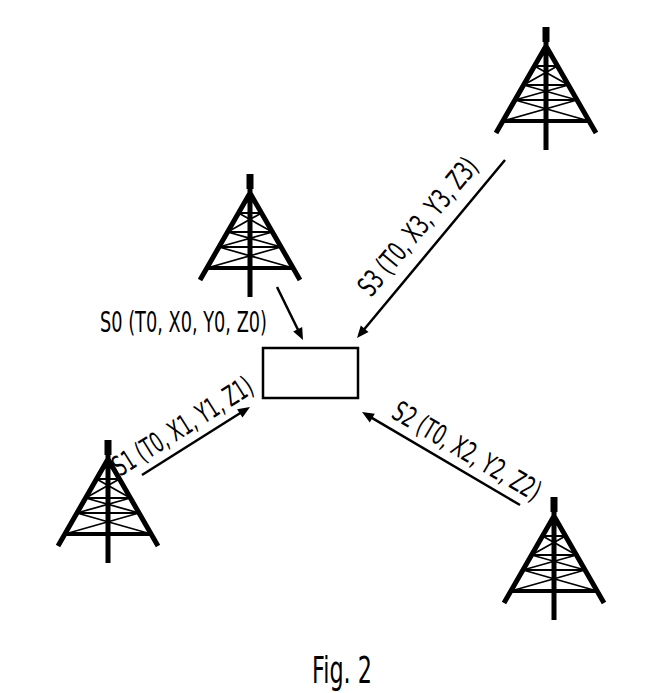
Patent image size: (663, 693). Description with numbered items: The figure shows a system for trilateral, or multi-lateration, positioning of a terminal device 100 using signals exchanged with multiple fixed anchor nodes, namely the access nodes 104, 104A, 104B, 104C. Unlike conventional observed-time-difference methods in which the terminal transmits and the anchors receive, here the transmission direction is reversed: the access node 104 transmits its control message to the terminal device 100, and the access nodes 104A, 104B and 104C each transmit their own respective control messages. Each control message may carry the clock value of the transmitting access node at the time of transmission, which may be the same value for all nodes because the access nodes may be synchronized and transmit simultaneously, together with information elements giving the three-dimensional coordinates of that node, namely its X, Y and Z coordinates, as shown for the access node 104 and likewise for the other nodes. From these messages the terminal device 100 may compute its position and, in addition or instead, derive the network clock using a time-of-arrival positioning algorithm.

The terminal device 100 is at (312, 391).
The access node 104 is at (246, 188).
The access node 104A is at (104, 455).
The access node 104B is at (550, 512).
The access node 104C is at (542, 44).